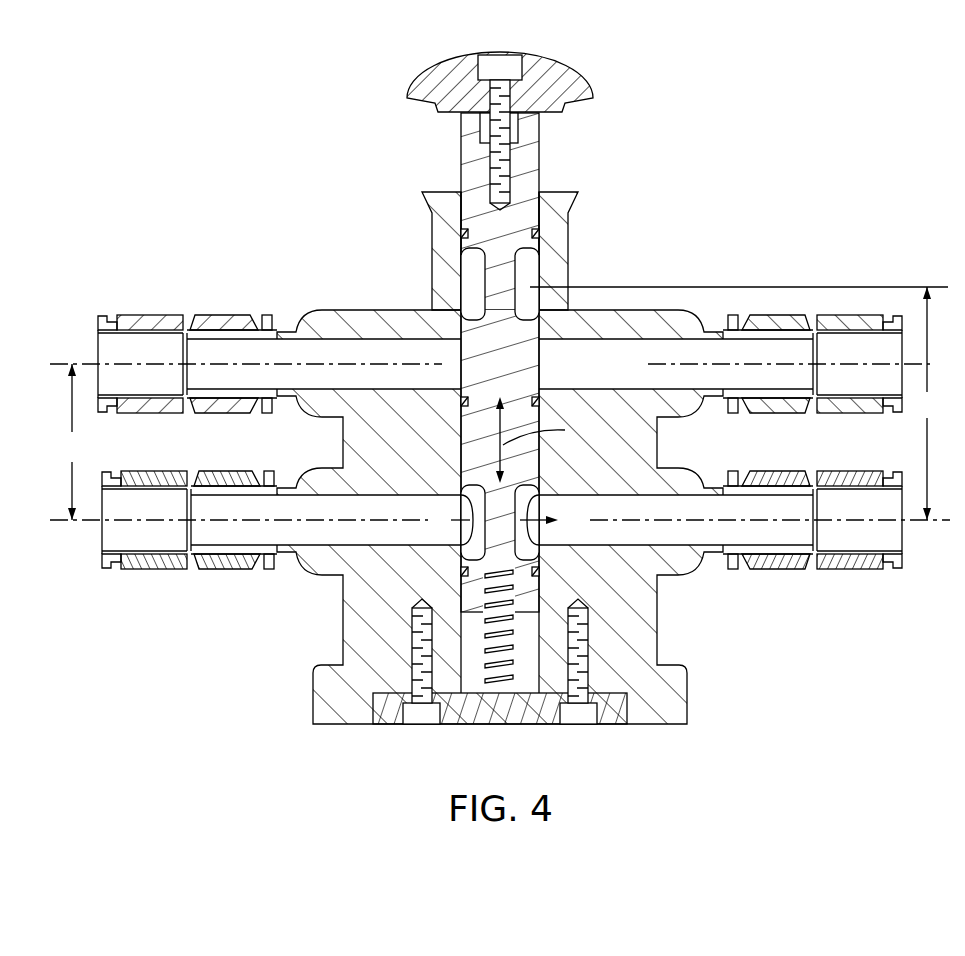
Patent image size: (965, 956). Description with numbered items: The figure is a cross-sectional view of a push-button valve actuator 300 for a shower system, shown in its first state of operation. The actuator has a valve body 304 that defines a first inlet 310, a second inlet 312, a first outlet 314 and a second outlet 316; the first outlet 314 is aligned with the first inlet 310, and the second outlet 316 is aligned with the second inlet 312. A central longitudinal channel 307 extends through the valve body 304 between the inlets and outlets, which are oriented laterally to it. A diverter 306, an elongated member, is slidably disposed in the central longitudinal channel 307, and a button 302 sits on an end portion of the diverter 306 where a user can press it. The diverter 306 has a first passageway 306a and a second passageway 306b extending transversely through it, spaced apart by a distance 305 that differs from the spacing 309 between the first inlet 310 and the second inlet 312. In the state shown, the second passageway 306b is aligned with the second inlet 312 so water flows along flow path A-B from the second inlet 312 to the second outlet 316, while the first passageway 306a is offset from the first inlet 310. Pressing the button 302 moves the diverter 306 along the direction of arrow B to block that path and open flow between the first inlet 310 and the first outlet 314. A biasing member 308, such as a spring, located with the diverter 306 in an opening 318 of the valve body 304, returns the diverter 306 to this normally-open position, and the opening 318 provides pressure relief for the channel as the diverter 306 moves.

The push-button valve actuator 300 is at (868, 212).
The button 302 is at (554, 75).
The valve body 304 is at (408, 322).
The distance 305 is at (739, 403).
The diverter 306 is at (527, 354).
The first passageway 306a is at (530, 266).
The second passageway 306b is at (532, 502).
The central longitudinal channel 307 is at (524, 658).
The biasing member 308 is at (490, 666).
The spacing 309 is at (72, 442).
The first inlet 310 is at (229, 350).
The second inlet 312 is at (240, 537).
The first outlet 314 is at (770, 376).
The second outlet 316 is at (748, 538).
The opening 318 is at (497, 716).